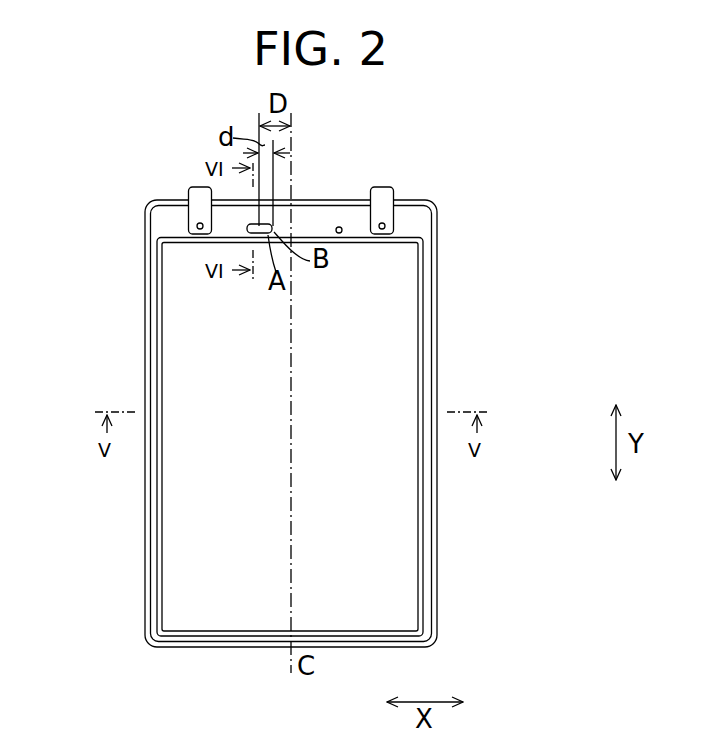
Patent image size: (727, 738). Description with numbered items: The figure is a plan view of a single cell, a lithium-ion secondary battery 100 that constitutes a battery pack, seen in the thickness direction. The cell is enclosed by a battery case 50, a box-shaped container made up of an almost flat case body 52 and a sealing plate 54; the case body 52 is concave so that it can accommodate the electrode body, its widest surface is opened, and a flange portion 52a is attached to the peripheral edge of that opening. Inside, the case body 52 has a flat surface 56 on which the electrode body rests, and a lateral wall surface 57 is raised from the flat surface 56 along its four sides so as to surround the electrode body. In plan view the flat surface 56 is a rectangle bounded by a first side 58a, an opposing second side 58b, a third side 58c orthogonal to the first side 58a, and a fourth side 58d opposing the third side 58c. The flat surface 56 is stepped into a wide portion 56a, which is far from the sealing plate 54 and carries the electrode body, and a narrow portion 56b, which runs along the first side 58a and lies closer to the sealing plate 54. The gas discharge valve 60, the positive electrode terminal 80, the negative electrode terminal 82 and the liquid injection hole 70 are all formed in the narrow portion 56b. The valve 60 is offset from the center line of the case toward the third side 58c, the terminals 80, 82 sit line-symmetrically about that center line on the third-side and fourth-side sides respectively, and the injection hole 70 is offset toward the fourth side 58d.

The lithium-ion secondary battery 100 is at (476, 135).
The battery case 50 is at (443, 236).
The case body 52 is at (186, 568).
The flange portion 52a is at (150, 523).
The sealing plate 54 is at (145, 278).
The flat surface 56 is at (380, 522).
The wide portion 56a is at (403, 575).
The narrow portion 56b is at (326, 220).
The lateral wall surface 57 is at (156, 331).
The first side 58a is at (176, 210).
The second side 58b is at (253, 636).
The third side 58c is at (160, 369).
The fourth side 58d is at (424, 366).
The gas discharge valve 60 is at (270, 224).
The liquid injection hole 70 is at (342, 232).
The positive electrode terminal 80 is at (200, 195).
The negative electrode terminal 82 is at (384, 197).